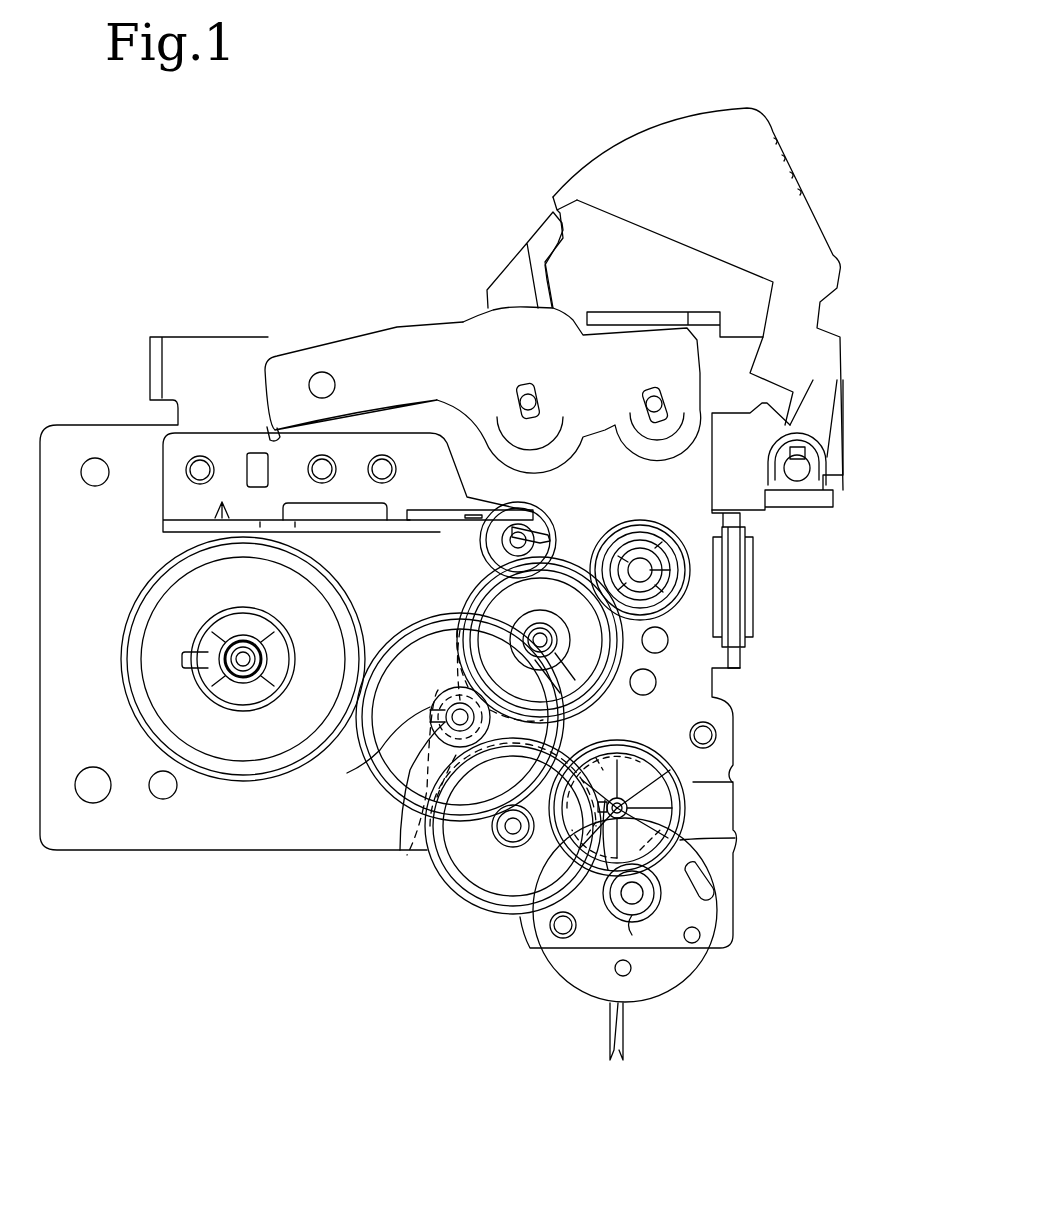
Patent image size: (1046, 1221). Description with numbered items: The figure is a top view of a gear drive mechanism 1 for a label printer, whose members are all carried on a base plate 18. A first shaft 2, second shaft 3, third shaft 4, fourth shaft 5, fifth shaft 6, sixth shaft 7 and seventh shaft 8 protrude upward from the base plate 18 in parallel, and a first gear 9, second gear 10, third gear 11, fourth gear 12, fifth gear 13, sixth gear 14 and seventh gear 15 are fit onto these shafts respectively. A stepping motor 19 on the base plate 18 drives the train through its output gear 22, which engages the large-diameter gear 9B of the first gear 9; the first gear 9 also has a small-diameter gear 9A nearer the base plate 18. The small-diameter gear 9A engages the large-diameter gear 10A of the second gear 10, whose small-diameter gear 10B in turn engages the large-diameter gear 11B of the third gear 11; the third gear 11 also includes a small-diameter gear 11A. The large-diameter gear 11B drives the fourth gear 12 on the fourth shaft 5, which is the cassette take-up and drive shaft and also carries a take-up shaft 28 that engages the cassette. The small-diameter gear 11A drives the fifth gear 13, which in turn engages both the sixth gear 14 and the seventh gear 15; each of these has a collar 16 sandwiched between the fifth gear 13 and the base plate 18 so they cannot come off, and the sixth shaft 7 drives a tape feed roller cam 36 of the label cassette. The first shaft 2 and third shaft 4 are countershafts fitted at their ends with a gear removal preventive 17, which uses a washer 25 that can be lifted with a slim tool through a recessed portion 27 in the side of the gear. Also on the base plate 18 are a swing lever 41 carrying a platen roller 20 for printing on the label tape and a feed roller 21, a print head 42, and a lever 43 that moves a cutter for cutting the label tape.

The gear drive mechanism 1 is at (451, 642).
The first shaft 2 is at (660, 785).
The second shaft 3 is at (512, 832).
The third shaft 4 is at (463, 720).
The fourth shaft 5 is at (243, 663).
The fifth shaft 6 is at (572, 672).
The sixth shaft 7 is at (640, 567).
The seventh shaft 8 is at (557, 490).
The first gear 9 is at (803, 755).
The small-diameter gear 9A is at (697, 777).
The large-diameter gear 9B is at (657, 810).
The second gear 10 is at (582, 1015).
The large-diameter gear 10A is at (503, 887).
The small-diameter gear 10B is at (523, 847).
The third gear 11 is at (447, 922).
The small-diameter gear 11A is at (430, 807).
The large-diameter gear 11B is at (427, 790).
The fourth gear 12 is at (227, 753).
The fifth gear 13 is at (503, 613).
The sixth gear 14 is at (677, 580).
The seventh gear 15 is at (485, 543).
The collar 16 is at (565, 555).
The gear removal preventive 17 is at (431, 689).
The base plate 18 is at (243, 833).
The stepping motor 19 is at (698, 965).
The platen roller 20 is at (477, 430).
The feed roller 21 is at (550, 330).
The output gear 22 is at (643, 907).
The washer 25 is at (435, 712).
The recessed portion 27 is at (430, 765).
The take-up shaft 28 is at (223, 653).
The tape feed roller cam 36 is at (665, 560).
The swing lever 41 is at (357, 340).
The print head 42 is at (520, 512).
The lever 43 is at (780, 205).